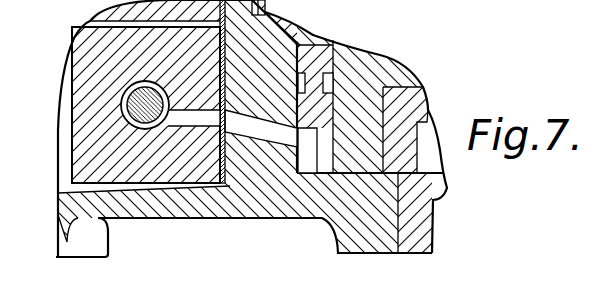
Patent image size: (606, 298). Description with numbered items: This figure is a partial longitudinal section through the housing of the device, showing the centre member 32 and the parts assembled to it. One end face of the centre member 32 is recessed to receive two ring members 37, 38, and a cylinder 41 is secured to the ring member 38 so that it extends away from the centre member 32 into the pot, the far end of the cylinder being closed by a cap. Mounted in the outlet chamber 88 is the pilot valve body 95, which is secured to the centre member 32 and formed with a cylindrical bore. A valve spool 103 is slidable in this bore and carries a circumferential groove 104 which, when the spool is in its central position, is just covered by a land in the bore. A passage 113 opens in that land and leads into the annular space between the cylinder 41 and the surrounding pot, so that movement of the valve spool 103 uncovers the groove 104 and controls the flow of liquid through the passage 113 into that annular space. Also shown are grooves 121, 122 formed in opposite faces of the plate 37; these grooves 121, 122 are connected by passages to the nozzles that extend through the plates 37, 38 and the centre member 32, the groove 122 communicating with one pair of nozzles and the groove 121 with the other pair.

The centre member 32 is at (273, 208).
The ring member 37 is at (330, 163).
The ring member 38 is at (373, 163).
The cylinder 41 is at (423, 97).
The outlet chamber 88 is at (60, 128).
The pilot valve body 95 is at (90, 65).
The valve spool 103 is at (122, 106).
The circumferential groove 104 is at (127, 131).
The passage 113 is at (200, 121).
The groove 121 is at (330, 80).
The groove 122 is at (303, 82).